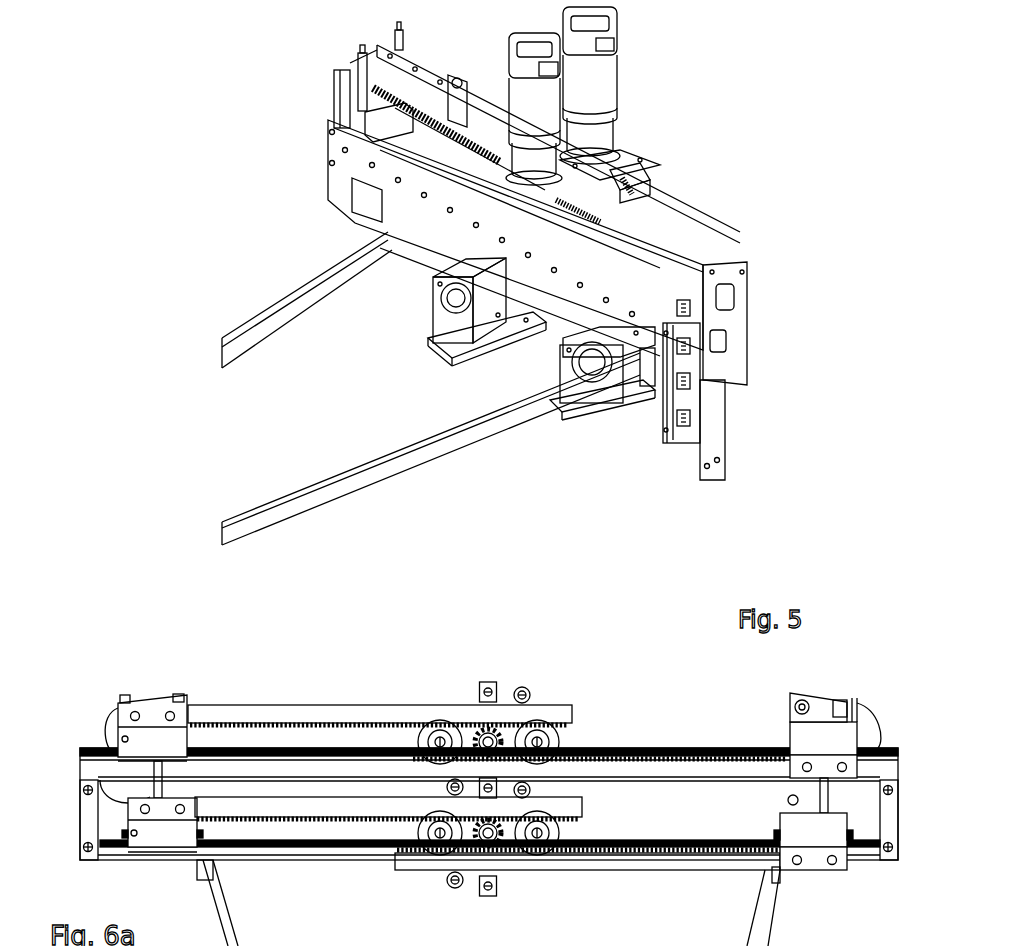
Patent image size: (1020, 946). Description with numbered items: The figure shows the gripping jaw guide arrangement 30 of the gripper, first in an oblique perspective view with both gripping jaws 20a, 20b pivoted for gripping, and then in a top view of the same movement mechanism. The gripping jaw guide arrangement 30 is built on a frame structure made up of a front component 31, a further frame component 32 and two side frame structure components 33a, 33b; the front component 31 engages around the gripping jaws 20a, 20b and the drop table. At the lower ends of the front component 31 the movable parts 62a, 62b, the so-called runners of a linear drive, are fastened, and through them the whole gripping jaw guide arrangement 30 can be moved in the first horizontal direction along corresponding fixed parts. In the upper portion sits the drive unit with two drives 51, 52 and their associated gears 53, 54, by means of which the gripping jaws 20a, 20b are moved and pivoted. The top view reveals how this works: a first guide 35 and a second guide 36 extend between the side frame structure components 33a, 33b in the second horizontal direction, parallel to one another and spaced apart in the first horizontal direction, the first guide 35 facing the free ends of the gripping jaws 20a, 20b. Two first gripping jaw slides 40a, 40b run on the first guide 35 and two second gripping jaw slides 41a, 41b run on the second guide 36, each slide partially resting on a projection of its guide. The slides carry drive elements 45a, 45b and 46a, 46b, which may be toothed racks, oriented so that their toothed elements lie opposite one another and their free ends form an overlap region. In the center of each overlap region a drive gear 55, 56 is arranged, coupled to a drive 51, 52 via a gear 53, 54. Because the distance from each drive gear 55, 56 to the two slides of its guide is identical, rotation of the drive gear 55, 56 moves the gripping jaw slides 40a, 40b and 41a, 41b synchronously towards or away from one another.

In FIG. 5, the gripping jaw 20a is at (260, 308).
In FIG. 5, the gripping jaw 20b is at (277, 517).
In FIG. 5, the gripping jaw guide arrangement 30 is at (730, 194).
In FIG. 5, the front component 31 is at (342, 196).
In FIG. 5, the frame structure component 32 is at (703, 260).
In FIG. 5, the side frame structure component 33a is at (340, 107).
In FIG. 6A, the side frame structure component 33a is at (87, 803).
In FIG. 5, the side frame structure component 33b is at (737, 350).
In FIG. 6A, the side frame structure component 33b is at (888, 800).
In FIG. 6A, the first guide 35 is at (327, 840).
In FIG. 6A, the second guide 36 is at (227, 792).
In FIG. 6A, the first gripping jaw slide 40a is at (168, 820).
In FIG. 6A, the first gripping jaw slide 40b is at (820, 818).
In FIG. 6A, the second gripping jaw slide 41a is at (147, 713).
In FIG. 6A, the second gripping jaw slide 41b is at (795, 708).
In FIG. 6A, the drive element 45a is at (240, 757).
In FIG. 6A, the drive element 45b is at (662, 850).
In FIG. 6A, the drive element 46a is at (347, 700).
In FIG. 6A, the drive element 46b is at (723, 760).
In FIG. 5, the drive 51 is at (590, 97).
In FIG. 5, the drive 52 is at (530, 107).
In FIG. 5, the gear 53 is at (585, 142).
In FIG. 5, the gear 54 is at (627, 190).
In FIG. 6A, the drive gear 55 is at (490, 848).
In FIG. 6A, the drive gear 56 is at (560, 722).
In FIG. 5, the movable part 62a is at (433, 340).
In FIG. 5, the movable part 62b is at (557, 350).